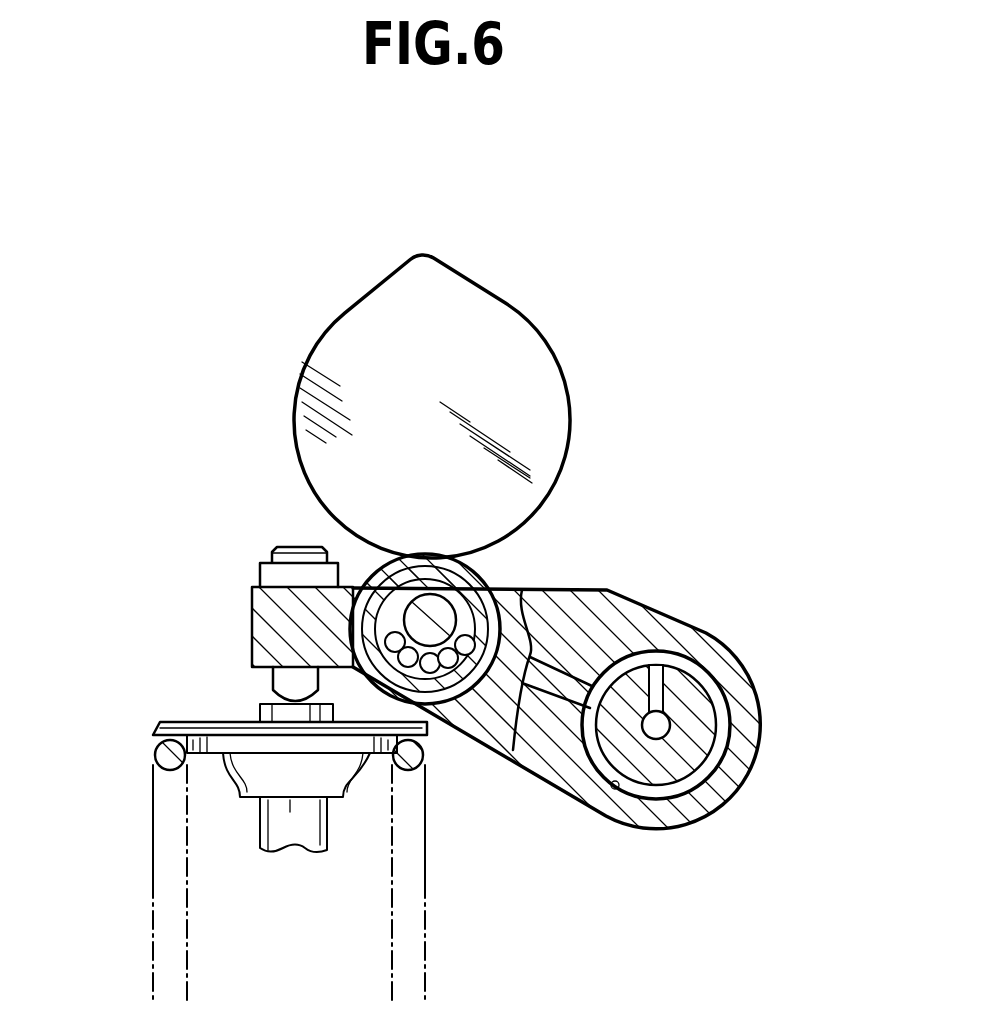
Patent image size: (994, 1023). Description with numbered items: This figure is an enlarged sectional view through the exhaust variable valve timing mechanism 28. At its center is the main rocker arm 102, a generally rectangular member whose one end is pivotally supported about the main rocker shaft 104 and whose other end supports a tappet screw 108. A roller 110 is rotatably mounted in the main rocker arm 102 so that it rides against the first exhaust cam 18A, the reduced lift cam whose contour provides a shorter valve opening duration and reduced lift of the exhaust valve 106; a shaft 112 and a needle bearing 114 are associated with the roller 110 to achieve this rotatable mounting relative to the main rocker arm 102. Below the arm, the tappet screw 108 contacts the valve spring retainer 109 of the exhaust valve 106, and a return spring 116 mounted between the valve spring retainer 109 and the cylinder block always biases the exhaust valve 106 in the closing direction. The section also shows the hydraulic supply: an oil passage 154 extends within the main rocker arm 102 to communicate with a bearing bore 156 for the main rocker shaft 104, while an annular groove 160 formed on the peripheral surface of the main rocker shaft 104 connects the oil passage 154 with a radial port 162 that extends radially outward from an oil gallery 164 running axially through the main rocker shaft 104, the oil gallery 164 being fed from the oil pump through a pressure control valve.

The first exhaust cam 18A is at (527, 300).
The exhaust variable valve timing mechanism 28 is at (619, 416).
The main rocker arm 102 is at (253, 608).
The main rocker shaft 104 is at (697, 829).
The exhaust valve 106 is at (145, 812).
The tappet screw 108 is at (273, 682).
The valve spring retainer 109 is at (215, 722).
The roller 110 is at (483, 568).
The shaft 112 is at (410, 612).
The needle bearing 114 is at (487, 587).
The return spring 116 is at (157, 745).
The oil passage 154 is at (552, 685).
The bearing bore 156 is at (612, 790).
The annular groove 160 is at (697, 670).
The radial port 162 is at (656, 664).
The oil gallery 164 is at (738, 797).